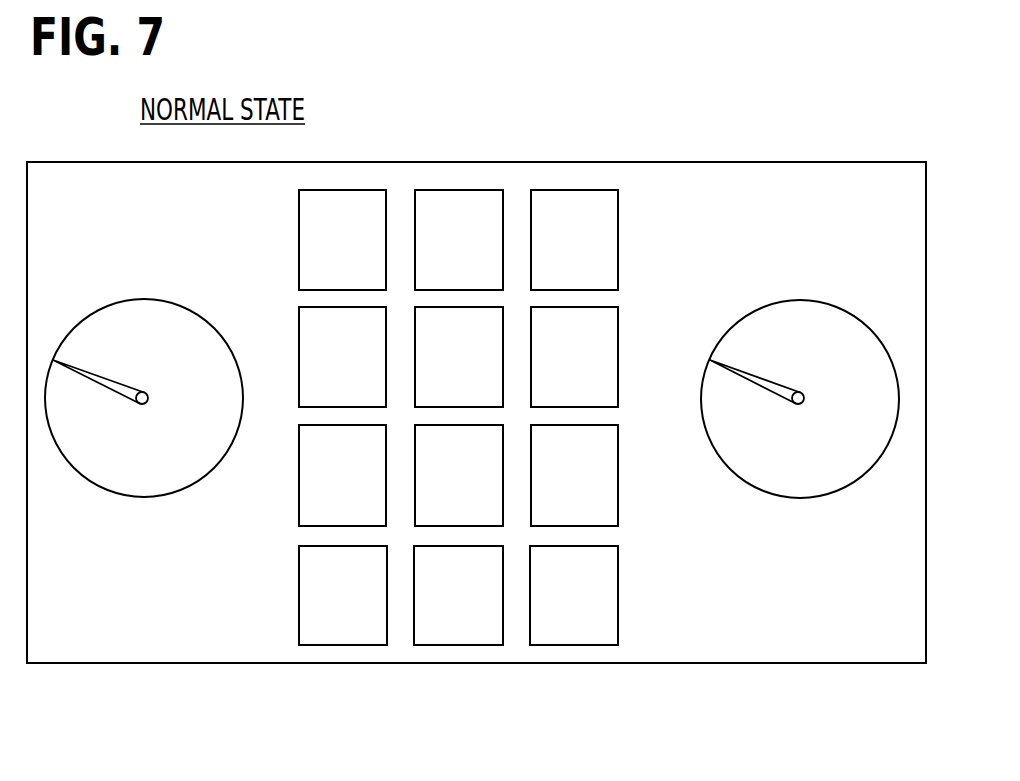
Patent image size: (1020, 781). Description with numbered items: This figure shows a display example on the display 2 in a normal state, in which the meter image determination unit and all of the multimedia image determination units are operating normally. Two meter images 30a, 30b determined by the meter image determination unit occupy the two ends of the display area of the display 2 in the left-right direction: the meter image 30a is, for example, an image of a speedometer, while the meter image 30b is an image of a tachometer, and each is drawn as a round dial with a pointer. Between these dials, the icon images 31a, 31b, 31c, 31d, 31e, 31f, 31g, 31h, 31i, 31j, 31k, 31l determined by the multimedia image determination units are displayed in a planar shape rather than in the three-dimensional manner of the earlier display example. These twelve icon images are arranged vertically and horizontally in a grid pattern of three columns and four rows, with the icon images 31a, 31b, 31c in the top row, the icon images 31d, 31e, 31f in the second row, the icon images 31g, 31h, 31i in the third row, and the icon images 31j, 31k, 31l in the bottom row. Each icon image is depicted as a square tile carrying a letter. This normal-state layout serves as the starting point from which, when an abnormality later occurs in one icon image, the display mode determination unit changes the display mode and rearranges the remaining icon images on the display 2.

The display 2 is at (870, 161).
The meter image 30a is at (138, 298).
The meter image 30b is at (797, 300).
The icon image 31a is at (360, 190).
The icon image 31b is at (443, 190).
The icon image 31c is at (590, 190).
The icon image 31d is at (299, 325).
The icon image 31e is at (503, 331).
The icon image 31f is at (618, 323).
The icon image 31g is at (299, 489).
The icon image 31h is at (503, 510).
The icon image 31i is at (618, 443).
The icon image 31j is at (299, 578).
The icon image 31k is at (458, 645).
The icon image 31l is at (618, 570).